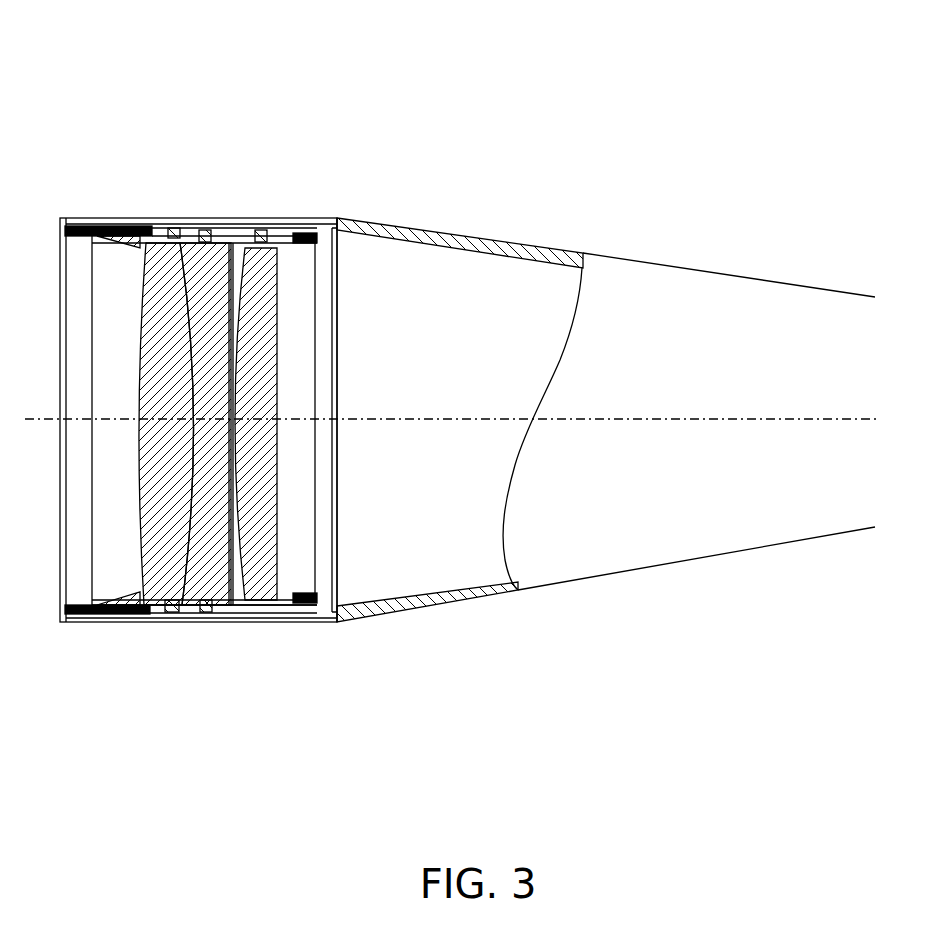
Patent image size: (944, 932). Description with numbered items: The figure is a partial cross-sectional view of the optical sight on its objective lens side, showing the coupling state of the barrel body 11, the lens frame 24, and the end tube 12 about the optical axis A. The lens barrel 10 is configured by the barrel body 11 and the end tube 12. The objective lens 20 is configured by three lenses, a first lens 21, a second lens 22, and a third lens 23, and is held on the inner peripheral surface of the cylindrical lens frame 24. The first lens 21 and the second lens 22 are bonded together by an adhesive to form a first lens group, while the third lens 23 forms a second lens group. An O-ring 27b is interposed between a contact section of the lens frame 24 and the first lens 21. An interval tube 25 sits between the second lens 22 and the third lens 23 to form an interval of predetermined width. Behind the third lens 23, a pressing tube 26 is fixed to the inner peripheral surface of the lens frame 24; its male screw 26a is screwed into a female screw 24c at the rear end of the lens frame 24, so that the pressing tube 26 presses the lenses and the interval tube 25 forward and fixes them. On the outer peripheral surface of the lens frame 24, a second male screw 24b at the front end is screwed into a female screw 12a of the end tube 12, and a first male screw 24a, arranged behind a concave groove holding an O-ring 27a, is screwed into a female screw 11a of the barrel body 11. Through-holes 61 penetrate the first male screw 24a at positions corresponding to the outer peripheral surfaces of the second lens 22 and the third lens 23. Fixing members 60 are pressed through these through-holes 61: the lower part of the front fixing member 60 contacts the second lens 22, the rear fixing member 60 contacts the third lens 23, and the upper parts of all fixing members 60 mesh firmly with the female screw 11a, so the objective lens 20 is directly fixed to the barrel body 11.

The lens barrel 10 is at (563, 78).
The barrel body 11 is at (533, 245).
The female screw 11a is at (211, 187).
The end tube 12 is at (78, 218).
The female screw 12a is at (120, 375).
The objective lens 20 is at (280, 424).
The first lens 21 is at (180, 277).
The second lens 22 is at (213, 328).
The third lens 23 is at (383, 268).
The lens frame 24 is at (140, 245).
The first male screw 24a is at (305, 218).
The second male screw 24b is at (122, 218).
The female screw 24c is at (372, 389).
The interval tube 25 is at (232, 600).
The pressing tube 26 is at (300, 567).
The male screw 26a is at (350, 218).
The O-ring 27a is at (165, 218).
The O-ring 27b is at (140, 248).
The fixing member 60 is at (225, 351).
The through-hole 61 is at (212, 218).
The optical axis A is at (490, 420).